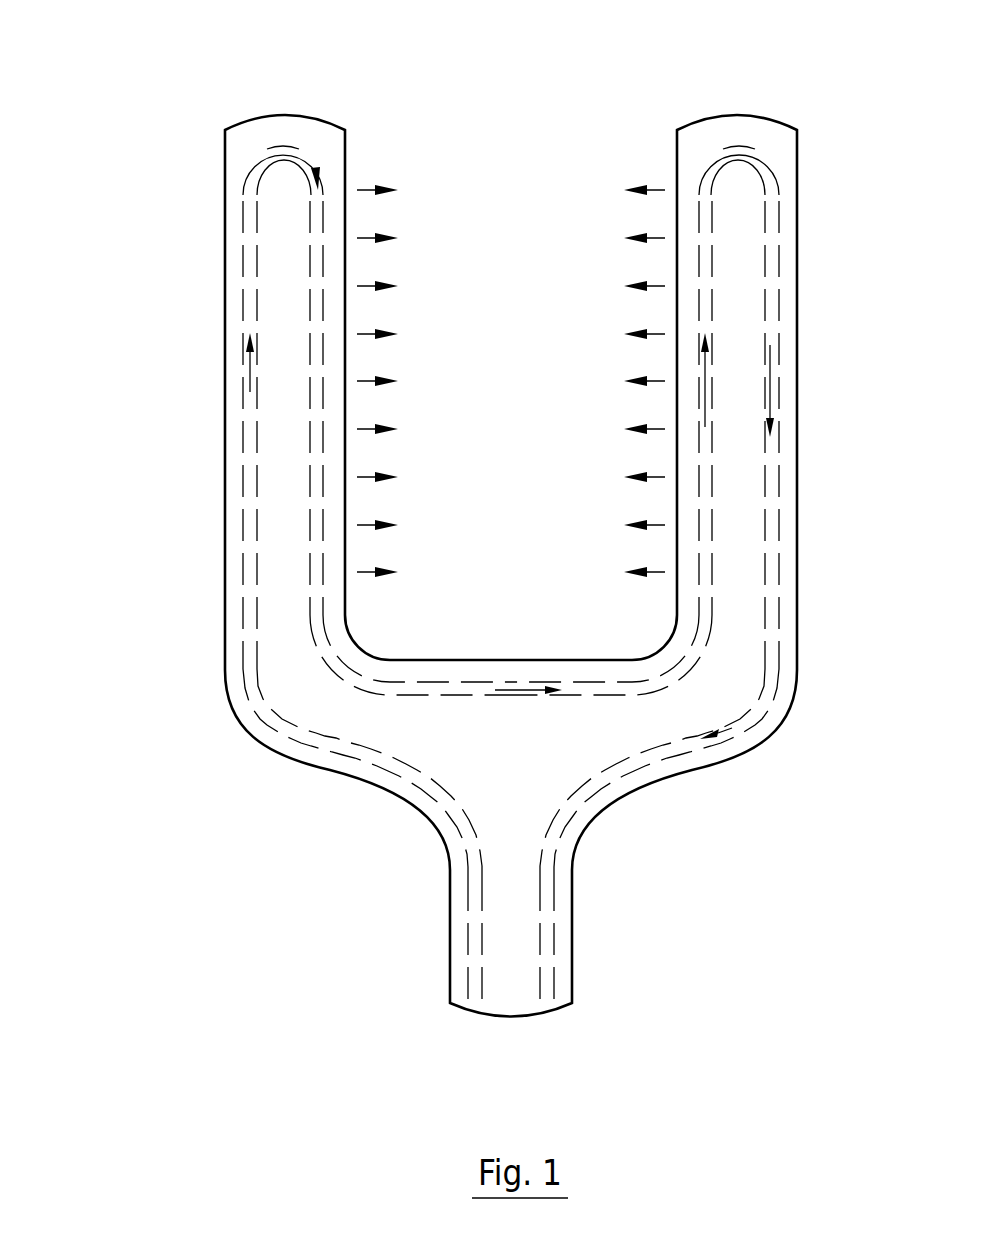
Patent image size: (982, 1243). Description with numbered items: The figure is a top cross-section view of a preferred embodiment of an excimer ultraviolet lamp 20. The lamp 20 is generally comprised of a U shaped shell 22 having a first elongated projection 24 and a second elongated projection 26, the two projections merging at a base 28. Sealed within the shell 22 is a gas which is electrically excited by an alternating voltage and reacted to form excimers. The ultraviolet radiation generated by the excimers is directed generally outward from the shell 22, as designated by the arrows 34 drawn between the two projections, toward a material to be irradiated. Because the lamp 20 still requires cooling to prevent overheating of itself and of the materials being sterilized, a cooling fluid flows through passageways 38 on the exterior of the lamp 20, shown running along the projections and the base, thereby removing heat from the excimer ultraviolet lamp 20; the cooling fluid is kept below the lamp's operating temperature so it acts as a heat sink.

The excimer ultraviolet lamp 20 is at (270, 795).
The U shaped shell 22 is at (232, 712).
The first elongated projection 24 is at (225, 210).
The second elongated projection 26 is at (742, 113).
The base 28 is at (595, 823).
The arrows 34 is at (363, 182).
The passageways 38 is at (474, 903).